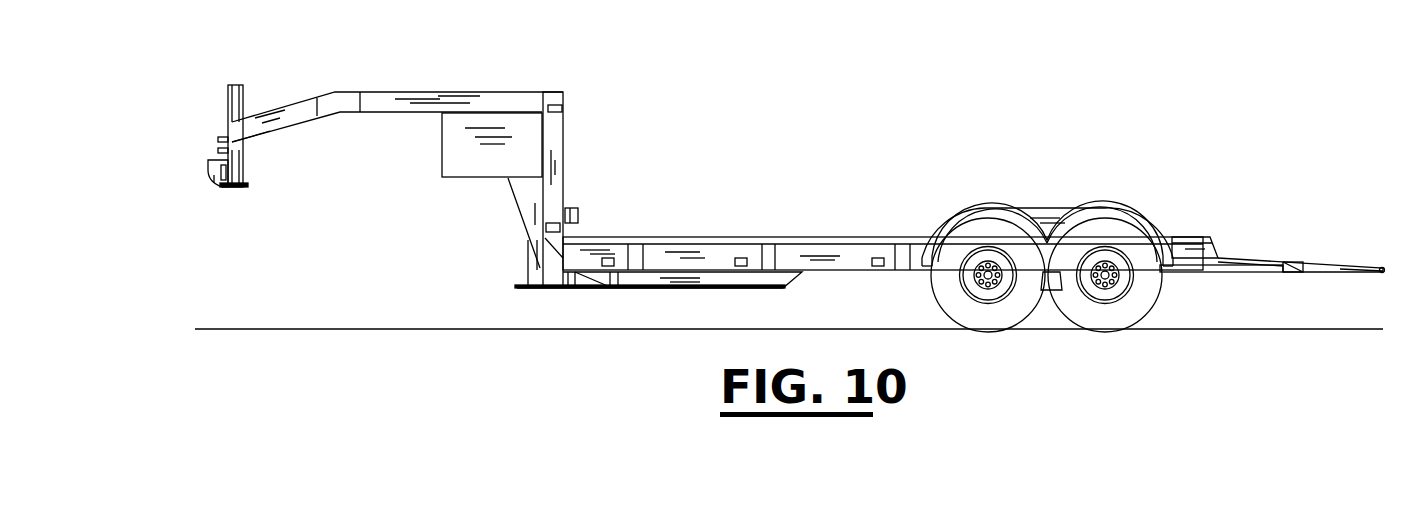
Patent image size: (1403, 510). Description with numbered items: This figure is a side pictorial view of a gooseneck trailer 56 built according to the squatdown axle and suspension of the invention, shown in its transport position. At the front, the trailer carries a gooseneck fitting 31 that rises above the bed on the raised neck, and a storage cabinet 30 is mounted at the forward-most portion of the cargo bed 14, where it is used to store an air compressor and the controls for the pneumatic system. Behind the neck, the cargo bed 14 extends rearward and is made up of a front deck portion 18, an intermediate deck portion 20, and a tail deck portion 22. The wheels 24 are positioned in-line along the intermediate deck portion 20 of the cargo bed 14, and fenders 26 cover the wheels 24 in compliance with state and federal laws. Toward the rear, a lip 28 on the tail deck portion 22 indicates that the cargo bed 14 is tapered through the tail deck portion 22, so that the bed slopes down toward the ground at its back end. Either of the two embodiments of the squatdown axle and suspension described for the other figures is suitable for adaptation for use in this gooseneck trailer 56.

The gooseneck trailer 56 is at (790, 182).
The gooseneck fitting 31 is at (235, 175).
The storage cabinet 30 is at (515, 152).
The front deck portion 18 is at (615, 235).
The intermediate deck portion 20 is at (898, 233).
The fenders 26 is at (1030, 207).
The wheels 24 is at (1100, 230).
The cargo bed 14 is at (1192, 268).
The tail deck portion 22 is at (1257, 255).
The lip 28 is at (1372, 273).